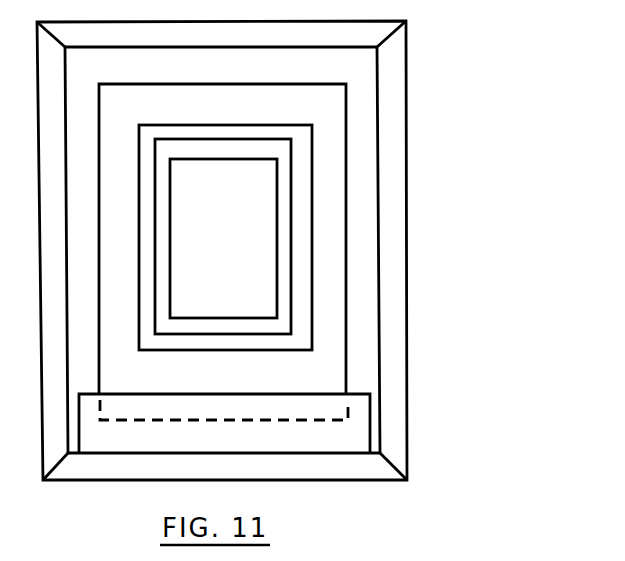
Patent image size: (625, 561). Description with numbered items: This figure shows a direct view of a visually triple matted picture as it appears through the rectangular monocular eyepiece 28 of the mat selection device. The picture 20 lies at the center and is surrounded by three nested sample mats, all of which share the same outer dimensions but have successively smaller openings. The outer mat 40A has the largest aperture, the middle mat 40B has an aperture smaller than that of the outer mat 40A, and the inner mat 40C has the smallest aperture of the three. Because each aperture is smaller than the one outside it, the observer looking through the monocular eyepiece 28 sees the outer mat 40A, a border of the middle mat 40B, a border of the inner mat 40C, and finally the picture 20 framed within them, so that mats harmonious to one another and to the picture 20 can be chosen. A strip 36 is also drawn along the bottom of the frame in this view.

The monocular eyepiece 28 is at (292, 250).
The picture 20 is at (358, 225).
The outer mat 40A is at (333, 239).
The middle mat 40B is at (354, 237).
The inner mat 40C is at (362, 236).
The bottom strip 36 is at (315, 418).